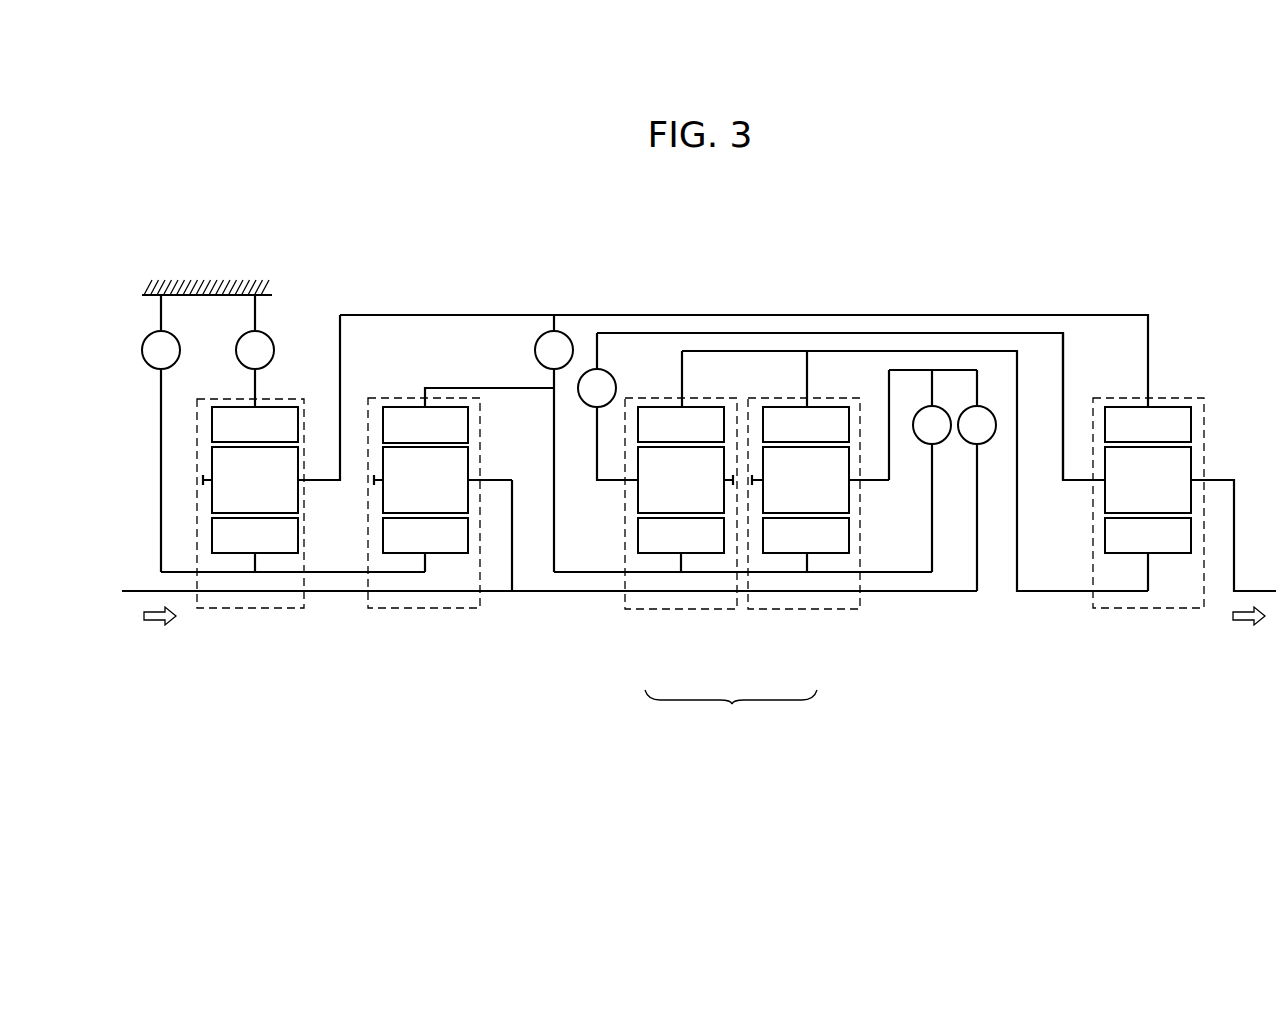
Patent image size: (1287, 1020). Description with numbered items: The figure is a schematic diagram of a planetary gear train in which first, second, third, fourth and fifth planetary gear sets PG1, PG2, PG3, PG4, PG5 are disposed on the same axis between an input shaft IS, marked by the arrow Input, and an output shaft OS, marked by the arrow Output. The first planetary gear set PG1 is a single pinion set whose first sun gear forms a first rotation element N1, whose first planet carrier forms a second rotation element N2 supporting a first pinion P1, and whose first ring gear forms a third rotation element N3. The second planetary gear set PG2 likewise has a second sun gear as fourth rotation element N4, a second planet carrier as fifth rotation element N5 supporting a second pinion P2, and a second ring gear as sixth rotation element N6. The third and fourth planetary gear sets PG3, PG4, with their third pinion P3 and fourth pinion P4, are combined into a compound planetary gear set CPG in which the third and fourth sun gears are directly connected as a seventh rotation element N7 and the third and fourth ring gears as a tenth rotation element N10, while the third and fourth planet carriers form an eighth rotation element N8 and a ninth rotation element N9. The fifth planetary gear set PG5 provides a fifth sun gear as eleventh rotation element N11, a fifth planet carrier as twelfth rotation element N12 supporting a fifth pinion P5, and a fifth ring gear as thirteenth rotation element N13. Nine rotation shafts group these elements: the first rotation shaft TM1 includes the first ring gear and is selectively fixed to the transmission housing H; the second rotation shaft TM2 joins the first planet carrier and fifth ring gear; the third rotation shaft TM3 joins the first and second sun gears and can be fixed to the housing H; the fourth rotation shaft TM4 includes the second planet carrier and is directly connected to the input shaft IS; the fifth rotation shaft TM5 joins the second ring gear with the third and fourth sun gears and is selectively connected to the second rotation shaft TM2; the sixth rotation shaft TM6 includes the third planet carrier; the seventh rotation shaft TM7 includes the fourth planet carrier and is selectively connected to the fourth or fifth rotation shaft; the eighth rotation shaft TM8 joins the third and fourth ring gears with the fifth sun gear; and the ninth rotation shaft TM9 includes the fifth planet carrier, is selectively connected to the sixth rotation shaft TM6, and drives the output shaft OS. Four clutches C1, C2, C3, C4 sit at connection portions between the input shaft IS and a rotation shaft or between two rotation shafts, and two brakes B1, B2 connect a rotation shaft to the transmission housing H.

The transmission housing H is at (216, 282).
The brake B1 is at (161, 433).
The brake B2 is at (255, 332).
The clutch C1 is at (977, 480).
The clutch C2 is at (608, 406).
The clutch C3 is at (932, 471).
The clutch C4 is at (554, 443).
The first rotation shaft TM1 is at (258, 383).
The second rotation shaft TM2 is at (582, 311).
The third rotation shaft TM3 is at (349, 578).
The fourth rotation shaft TM4 is at (507, 540).
The fifth rotation shaft TM5 is at (579, 578).
The sixth rotation shaft TM6 is at (603, 439).
The seventh rotation shaft TM7 is at (910, 367).
The eighth rotation shaft TM8 is at (752, 348).
The ninth rotation shaft TM9 is at (1070, 351).
The first rotation element N1 is at (255, 545).
The second rotation element N2 is at (322, 485).
The third rotation element N3 is at (255, 424).
The fourth rotation element N4 is at (425, 545).
The fifth rotation element N5 is at (500, 476).
The sixth rotation element N6 is at (468, 415).
The seventh rotation element N7 is at (743, 545).
The eighth rotation element N8 is at (600, 484).
The ninth rotation element N9 is at (870, 484).
The tenth rotation element N10 is at (743, 396).
The eleventh rotation element N11 is at (1148, 554).
The twelfth rotation element N12 is at (1075, 485).
The thirteenth rotation element N13 is at (1148, 424).
The first pinion P1 is at (250, 480).
The second pinion P2 is at (421, 480).
The third pinion P3 is at (685, 480).
The fourth pinion P4 is at (800, 480).
The fifth pinion P5 is at (1148, 480).
The first planetary gear set PG1 is at (248, 614).
The second planetary gear set PG2 is at (419, 614).
The third planetary gear set PG3 is at (676, 614).
The fourth planetary gear set PG4 is at (804, 614).
The fifth planetary gear set PG5 is at (1145, 614).
The compound planetary gear set CPG is at (731, 712).
The input shaft IS is at (322, 594).
The output shaft OS is at (1247, 588).
The input Input is at (161, 631).
The output Output is at (1247, 631).